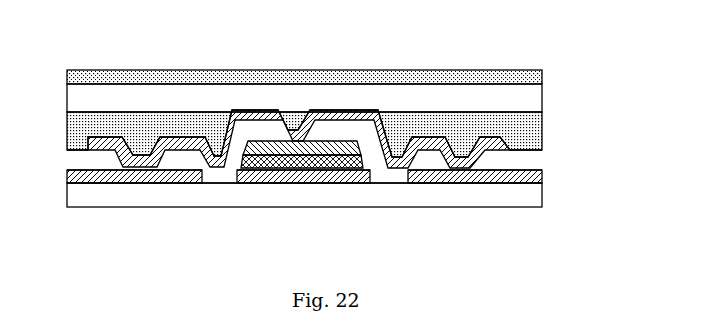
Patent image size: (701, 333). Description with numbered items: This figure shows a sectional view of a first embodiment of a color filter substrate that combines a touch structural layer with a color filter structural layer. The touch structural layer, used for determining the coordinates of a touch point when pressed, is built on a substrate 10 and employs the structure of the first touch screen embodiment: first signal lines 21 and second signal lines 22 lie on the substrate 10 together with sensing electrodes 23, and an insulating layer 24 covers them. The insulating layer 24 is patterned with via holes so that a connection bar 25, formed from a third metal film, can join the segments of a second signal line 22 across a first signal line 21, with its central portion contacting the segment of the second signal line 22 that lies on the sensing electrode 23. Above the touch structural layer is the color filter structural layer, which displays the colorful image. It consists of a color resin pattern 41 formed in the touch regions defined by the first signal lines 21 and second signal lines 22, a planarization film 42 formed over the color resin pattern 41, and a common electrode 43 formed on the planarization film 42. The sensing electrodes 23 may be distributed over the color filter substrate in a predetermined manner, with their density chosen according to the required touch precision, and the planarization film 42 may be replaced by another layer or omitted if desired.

The substrate 10 is at (143, 196).
The first signal line 21 is at (366, 178).
The second signal line 22 is at (460, 180).
The sensing electrode 23 is at (302, 162).
The insulating layer 24 is at (215, 177).
The connection bar 25 is at (295, 138).
The color resin pattern 41 is at (167, 123).
The planarization film 42 is at (445, 100).
The common electrode 43 is at (312, 75).